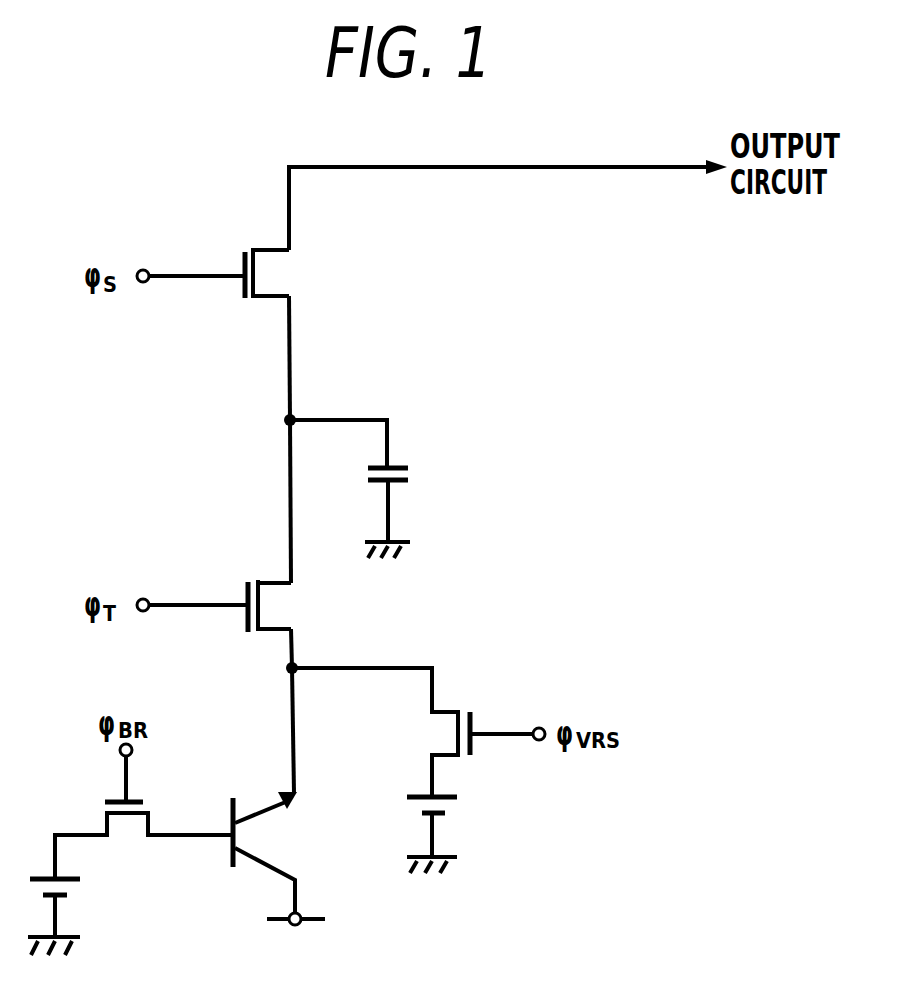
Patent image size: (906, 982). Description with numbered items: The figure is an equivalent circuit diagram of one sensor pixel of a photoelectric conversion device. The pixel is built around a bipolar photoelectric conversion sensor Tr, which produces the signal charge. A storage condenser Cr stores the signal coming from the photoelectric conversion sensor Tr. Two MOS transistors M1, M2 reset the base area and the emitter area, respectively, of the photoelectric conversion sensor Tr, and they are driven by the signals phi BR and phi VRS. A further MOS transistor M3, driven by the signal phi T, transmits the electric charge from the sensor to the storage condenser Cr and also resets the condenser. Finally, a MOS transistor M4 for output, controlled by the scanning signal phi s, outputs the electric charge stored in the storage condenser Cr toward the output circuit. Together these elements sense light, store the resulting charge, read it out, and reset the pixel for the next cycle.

The MOS transistor M1 is at (130, 874).
The MOS transistor M2 is at (387, 770).
The MOS transistor M3 is at (264, 587).
The MOS transistor for output M4 is at (261, 254).
The bipolar photoelectric conversion sensor Tr is at (272, 796).
The storage condenser Cr is at (370, 489).